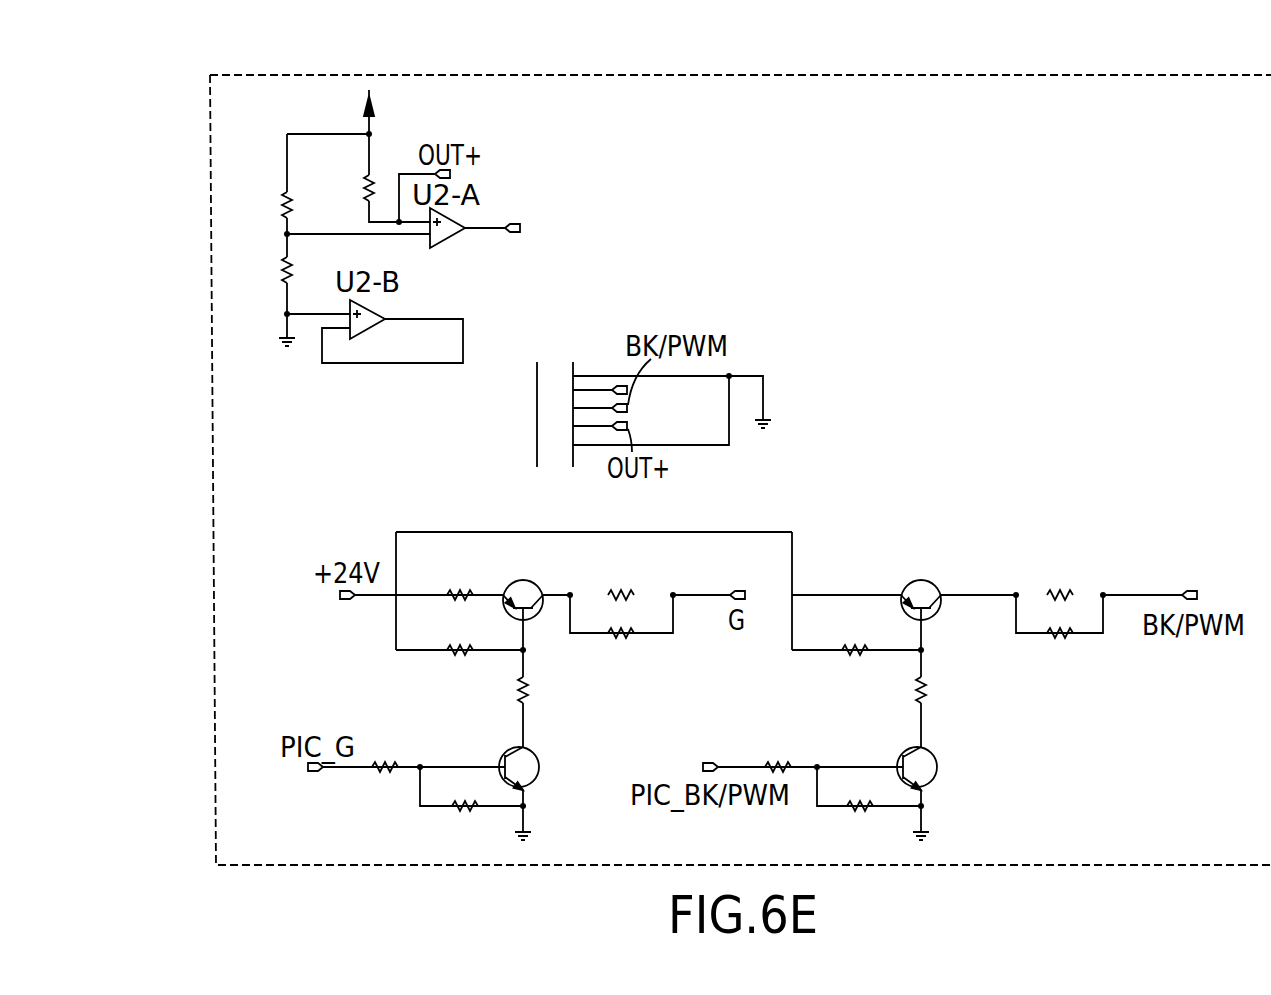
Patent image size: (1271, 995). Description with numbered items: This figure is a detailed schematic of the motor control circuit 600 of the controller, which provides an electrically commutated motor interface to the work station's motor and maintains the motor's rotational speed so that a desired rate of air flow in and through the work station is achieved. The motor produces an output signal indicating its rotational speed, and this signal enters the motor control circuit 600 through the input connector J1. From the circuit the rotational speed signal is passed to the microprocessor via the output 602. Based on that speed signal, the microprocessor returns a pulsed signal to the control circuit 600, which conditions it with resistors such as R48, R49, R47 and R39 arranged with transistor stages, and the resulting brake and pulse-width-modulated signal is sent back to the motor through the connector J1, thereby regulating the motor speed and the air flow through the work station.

The motor control circuit 600 is at (765, 75).
The output 602 is at (522, 224).
The input connector J1 is at (516, 422).
The resistor R39 is at (453, 824).
The resistor R47 is at (856, 637).
The resistor R48 is at (767, 753).
The resistor R49 is at (861, 824).